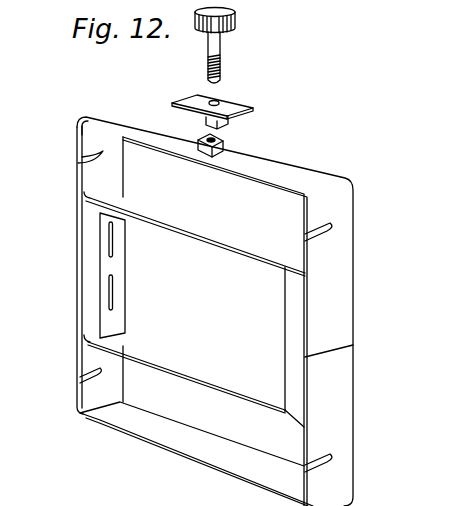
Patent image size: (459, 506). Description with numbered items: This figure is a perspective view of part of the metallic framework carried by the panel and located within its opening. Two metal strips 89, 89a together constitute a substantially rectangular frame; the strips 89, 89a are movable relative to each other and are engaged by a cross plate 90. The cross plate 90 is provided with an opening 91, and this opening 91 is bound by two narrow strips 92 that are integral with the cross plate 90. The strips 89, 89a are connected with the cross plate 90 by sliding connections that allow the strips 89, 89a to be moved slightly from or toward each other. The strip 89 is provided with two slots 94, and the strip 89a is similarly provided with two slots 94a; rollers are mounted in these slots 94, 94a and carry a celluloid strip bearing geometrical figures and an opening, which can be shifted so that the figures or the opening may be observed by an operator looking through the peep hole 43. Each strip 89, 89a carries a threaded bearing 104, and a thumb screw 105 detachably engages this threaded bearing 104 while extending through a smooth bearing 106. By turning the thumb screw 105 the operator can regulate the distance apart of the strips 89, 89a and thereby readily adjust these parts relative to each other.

The metal strip 89 is at (272, 169).
The metal strip 89a is at (193, 452).
The cross plate 90 is at (88, 237).
The opening 91 is at (203, 252).
The narrow strips 92 is at (243, 259).
The peep hole 43 is at (114, 242).
The slots 94 is at (83, 156).
The slots 94a is at (324, 463).
The threaded bearing 104 is at (225, 145).
The thumb screw 105 is at (229, 23).
The smooth bearing 106 is at (231, 100).